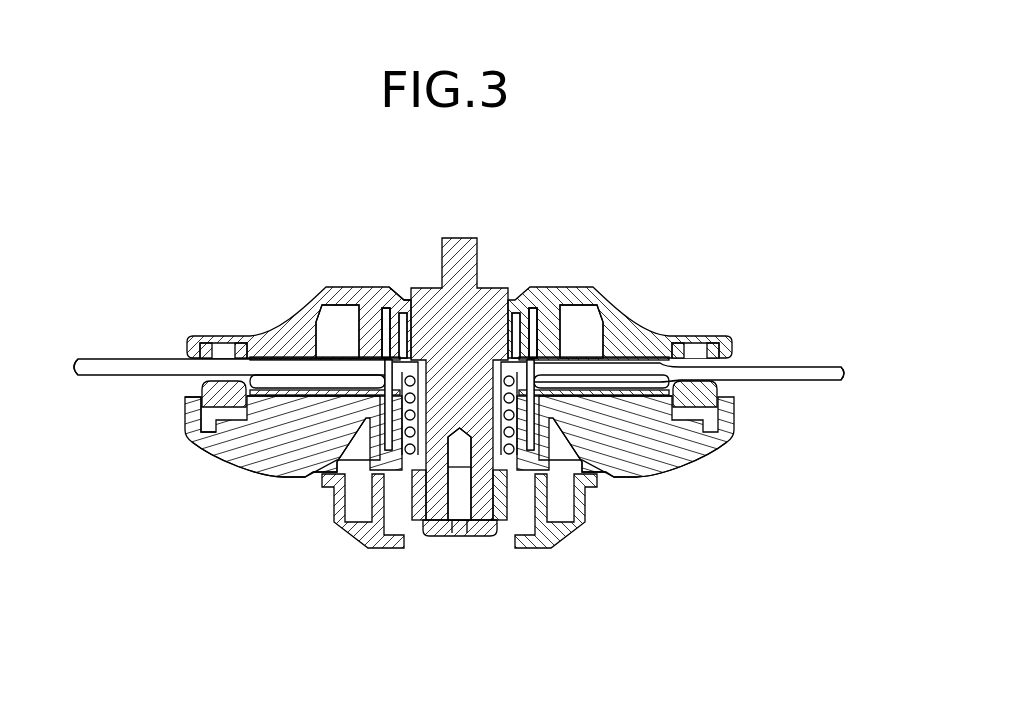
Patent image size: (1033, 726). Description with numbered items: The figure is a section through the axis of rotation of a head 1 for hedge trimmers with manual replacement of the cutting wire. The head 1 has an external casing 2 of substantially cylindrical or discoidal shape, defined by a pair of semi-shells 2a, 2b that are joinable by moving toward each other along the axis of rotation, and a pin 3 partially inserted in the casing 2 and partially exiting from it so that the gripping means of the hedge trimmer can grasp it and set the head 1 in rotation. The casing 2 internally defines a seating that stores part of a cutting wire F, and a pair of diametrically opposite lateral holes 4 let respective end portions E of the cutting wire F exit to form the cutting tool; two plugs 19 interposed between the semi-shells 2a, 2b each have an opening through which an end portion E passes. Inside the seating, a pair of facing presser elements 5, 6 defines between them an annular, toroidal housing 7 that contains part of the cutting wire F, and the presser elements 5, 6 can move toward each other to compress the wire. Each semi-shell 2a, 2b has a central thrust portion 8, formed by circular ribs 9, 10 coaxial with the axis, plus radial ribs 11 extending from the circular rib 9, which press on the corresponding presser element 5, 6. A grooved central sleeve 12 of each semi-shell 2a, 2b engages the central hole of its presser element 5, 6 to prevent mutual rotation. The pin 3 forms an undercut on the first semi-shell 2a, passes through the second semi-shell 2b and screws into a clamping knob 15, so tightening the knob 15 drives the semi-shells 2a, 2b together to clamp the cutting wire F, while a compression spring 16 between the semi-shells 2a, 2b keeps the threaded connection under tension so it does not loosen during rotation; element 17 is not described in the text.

The head 1 is at (745, 146).
The external casing 2 is at (217, 458).
The first semi-shell 2a is at (703, 350).
The second semi-shell 2b is at (205, 441).
The pin 3 is at (462, 236).
The lateral hole 4 is at (160, 356).
The presser element 5 is at (258, 340).
The presser element 6 is at (302, 422).
The annular shaped housing 7 is at (397, 340).
The central thrust portion 8 is at (365, 335).
The circular rib 9 is at (358, 333).
The circular rib 10 is at (322, 332).
The radial ribs 11 is at (330, 470).
The central sleeve 12 is at (407, 340).
The clamping knob 15 is at (357, 527).
The compression spring 16 is at (425, 540).
The pin 17 is at (462, 538).
The plugs 19 is at (200, 390).
The end portion E is at (78, 372).
The cutting wire F is at (108, 355).